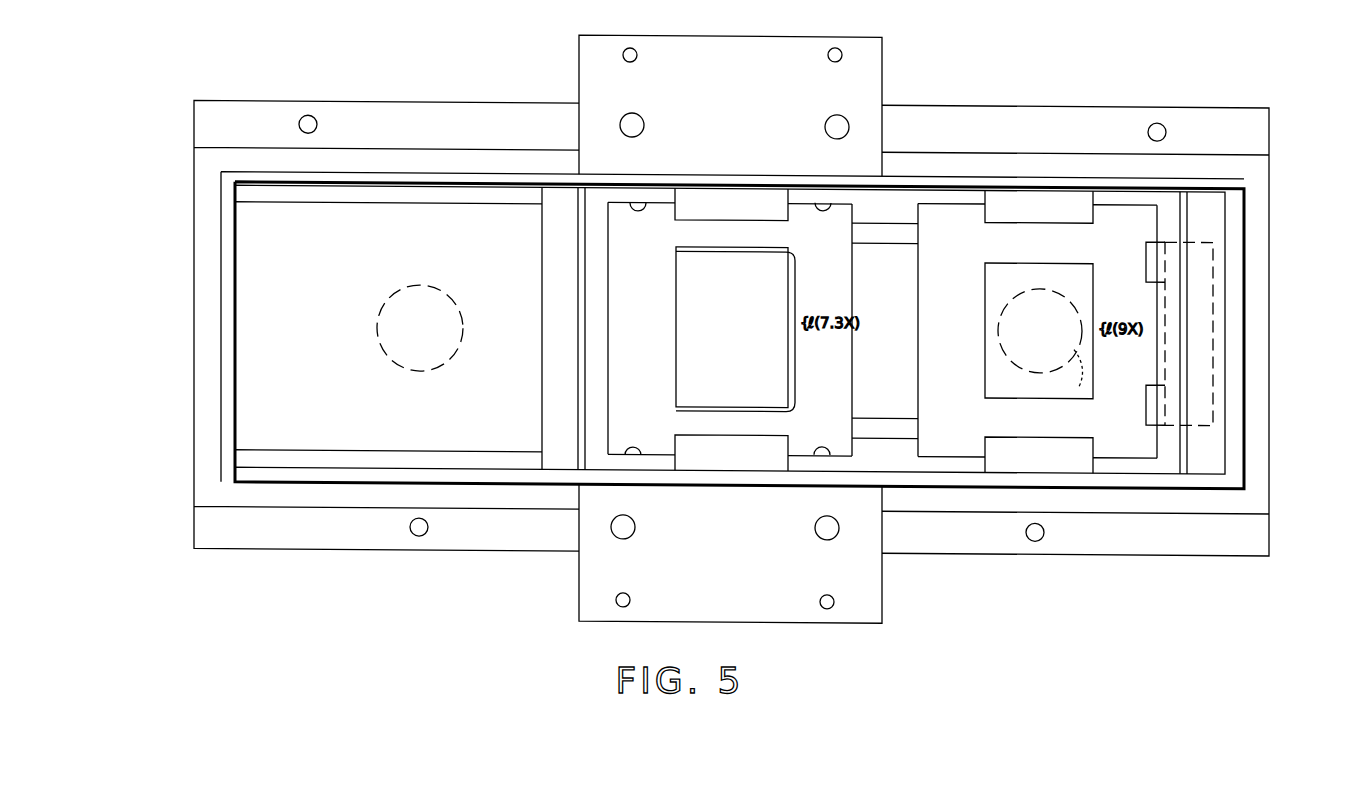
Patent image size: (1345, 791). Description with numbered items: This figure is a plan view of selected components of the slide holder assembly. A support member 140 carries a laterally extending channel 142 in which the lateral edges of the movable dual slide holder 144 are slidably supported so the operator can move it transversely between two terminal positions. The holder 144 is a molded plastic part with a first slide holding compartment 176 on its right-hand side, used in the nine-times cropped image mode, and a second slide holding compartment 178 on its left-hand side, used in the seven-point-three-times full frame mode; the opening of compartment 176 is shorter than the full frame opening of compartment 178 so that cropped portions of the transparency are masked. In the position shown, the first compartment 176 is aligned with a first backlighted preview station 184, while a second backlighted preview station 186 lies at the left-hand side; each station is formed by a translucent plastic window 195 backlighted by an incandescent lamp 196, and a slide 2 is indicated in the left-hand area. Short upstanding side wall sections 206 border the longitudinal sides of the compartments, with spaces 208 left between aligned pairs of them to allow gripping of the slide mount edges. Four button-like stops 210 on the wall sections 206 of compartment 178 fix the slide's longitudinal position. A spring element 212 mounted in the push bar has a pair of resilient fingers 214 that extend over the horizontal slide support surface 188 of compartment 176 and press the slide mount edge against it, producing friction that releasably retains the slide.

The support member 140 is at (163, 249).
The movable dual slide holder 144 is at (205, 416).
The laterally extending channel 142 is at (388, 272).
The second backlighted preview station 186 is at (372, 234).
The wafer 2 is at (440, 275).
The incandescent lamp 196 is at (460, 311).
The translucent plastic window 195 is at (279, 293).
The upstanding side wall section 206 is at (625, 196).
The second slide holding compartment 178 is at (663, 210).
The first slide holding compartment 176 is at (941, 221).
The horizontal slide support surface 188 is at (958, 241).
The space 208 is at (1058, 192).
The button-like stop 210 is at (639, 211).
The first backlighted preview station 184 is at (1064, 270).
The resilient finger 214 is at (1152, 260).
The spring element 212 is at (1167, 303).